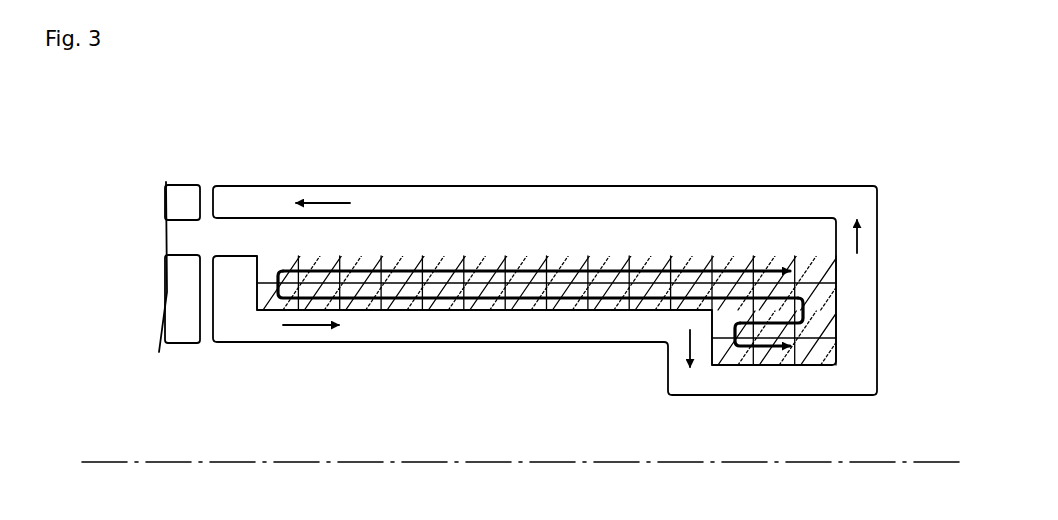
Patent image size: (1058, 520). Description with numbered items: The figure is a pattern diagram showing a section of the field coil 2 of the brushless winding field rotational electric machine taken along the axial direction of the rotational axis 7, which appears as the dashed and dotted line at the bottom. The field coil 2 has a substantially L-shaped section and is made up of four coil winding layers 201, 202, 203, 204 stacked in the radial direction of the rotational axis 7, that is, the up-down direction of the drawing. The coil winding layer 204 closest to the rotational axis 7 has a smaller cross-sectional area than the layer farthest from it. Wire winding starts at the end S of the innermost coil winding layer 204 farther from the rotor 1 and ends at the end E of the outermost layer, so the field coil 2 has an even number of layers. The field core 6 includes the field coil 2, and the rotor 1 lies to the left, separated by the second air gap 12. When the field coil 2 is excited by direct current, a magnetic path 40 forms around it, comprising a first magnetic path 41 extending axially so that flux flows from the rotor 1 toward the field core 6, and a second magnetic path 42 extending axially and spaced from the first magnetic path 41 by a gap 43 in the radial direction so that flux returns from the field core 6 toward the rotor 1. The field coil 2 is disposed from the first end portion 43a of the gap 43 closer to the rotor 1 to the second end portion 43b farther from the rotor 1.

The rotor 1 is at (172, 298).
The field coil 2 is at (648, 248).
The field core 6 is at (745, 186).
The rotational axis 7 is at (151, 462).
The second air gap 12 is at (207, 203).
The magnetic path 40 is at (268, 345).
The first magnetic path 41 is at (503, 325).
The second magnetic path 42 is at (527, 205).
The gap 43 is at (415, 238).
The first end portion 43a is at (268, 238).
The second end portion 43b is at (813, 243).
The coil winding layer 201 is at (832, 272).
The coil winding layer 202 is at (832, 296).
The coil winding layer 203 is at (832, 325).
The coil winding layer 204 is at (832, 348).